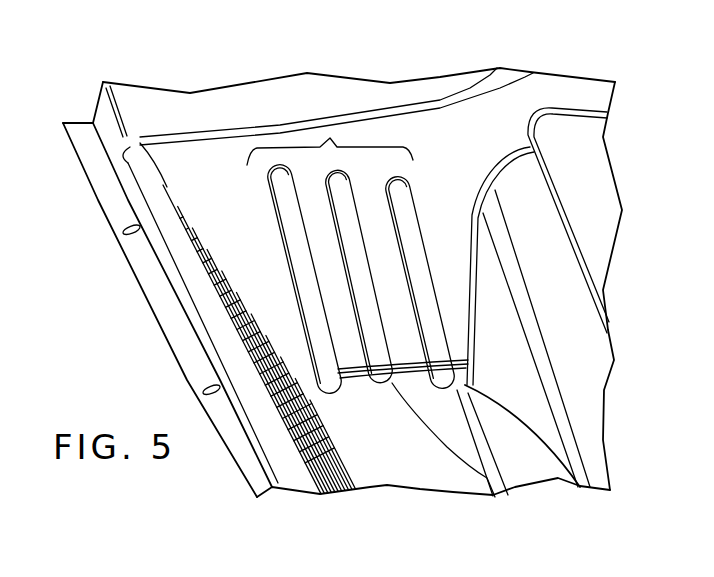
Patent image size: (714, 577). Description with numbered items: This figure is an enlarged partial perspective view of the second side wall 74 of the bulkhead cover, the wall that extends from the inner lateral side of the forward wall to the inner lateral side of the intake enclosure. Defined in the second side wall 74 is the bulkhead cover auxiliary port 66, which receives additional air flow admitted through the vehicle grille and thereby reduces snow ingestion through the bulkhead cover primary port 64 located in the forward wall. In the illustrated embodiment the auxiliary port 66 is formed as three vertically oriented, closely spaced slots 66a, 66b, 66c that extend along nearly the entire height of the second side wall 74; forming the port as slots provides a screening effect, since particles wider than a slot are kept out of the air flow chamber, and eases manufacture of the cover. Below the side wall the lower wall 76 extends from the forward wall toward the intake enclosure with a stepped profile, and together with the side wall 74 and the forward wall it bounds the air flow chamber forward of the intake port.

The bulkhead cover primary port 64 is at (305, 433).
The bulkhead cover auxiliary port 66 is at (428, 287).
The first vertically extending slot 66a is at (338, 390).
The second vertically extending slot 66b is at (493, 497).
The third vertically extending slot 66c is at (580, 486).
The second side wall 74 is at (265, 280).
The lower wall 76 is at (408, 470).